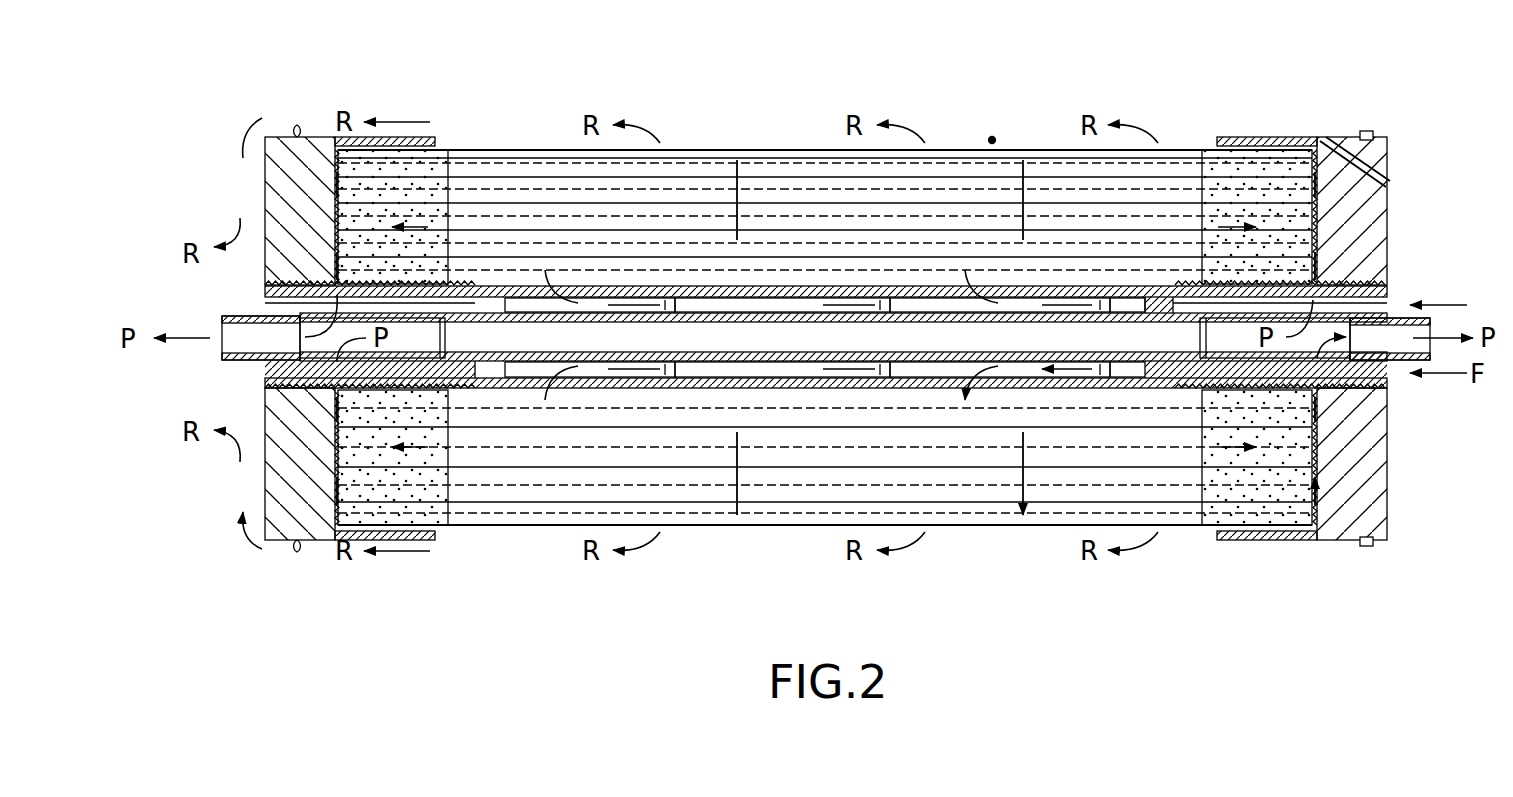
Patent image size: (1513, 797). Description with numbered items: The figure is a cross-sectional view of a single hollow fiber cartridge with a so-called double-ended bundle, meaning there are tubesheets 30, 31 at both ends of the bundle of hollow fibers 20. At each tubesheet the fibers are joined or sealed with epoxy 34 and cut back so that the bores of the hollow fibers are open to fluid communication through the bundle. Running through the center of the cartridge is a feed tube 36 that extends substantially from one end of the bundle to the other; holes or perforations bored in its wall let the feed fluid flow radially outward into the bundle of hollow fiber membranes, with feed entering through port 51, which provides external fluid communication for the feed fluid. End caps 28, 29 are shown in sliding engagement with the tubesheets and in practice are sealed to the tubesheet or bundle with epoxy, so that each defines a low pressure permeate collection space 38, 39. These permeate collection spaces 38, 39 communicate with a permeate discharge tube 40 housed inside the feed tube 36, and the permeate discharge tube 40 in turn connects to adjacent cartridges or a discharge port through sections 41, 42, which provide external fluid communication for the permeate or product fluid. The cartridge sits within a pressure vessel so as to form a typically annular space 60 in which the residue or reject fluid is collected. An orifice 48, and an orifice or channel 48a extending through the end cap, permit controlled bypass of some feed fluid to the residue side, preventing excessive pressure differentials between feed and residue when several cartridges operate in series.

The bundle of hollow fibers 20 is at (1100, 490).
The end cap 28 is at (300, 195).
The end cap 29 is at (1370, 248).
The tubesheet 30 is at (449, 503).
The tubesheet 31 is at (1209, 531).
The epoxy 34 is at (380, 477).
The feed tube 36 is at (805, 380).
The permeate collection space 38 is at (331, 279).
The permeate collection space 39 is at (1327, 386).
The permeate discharge tube 40 is at (1010, 368).
The section 41 is at (224, 361).
The section 42 is at (1432, 350).
The orifice 48 is at (1386, 180).
The orifice or channel 48a is at (300, 305).
The port 51 is at (1442, 302).
The space 60 is at (993, 138).